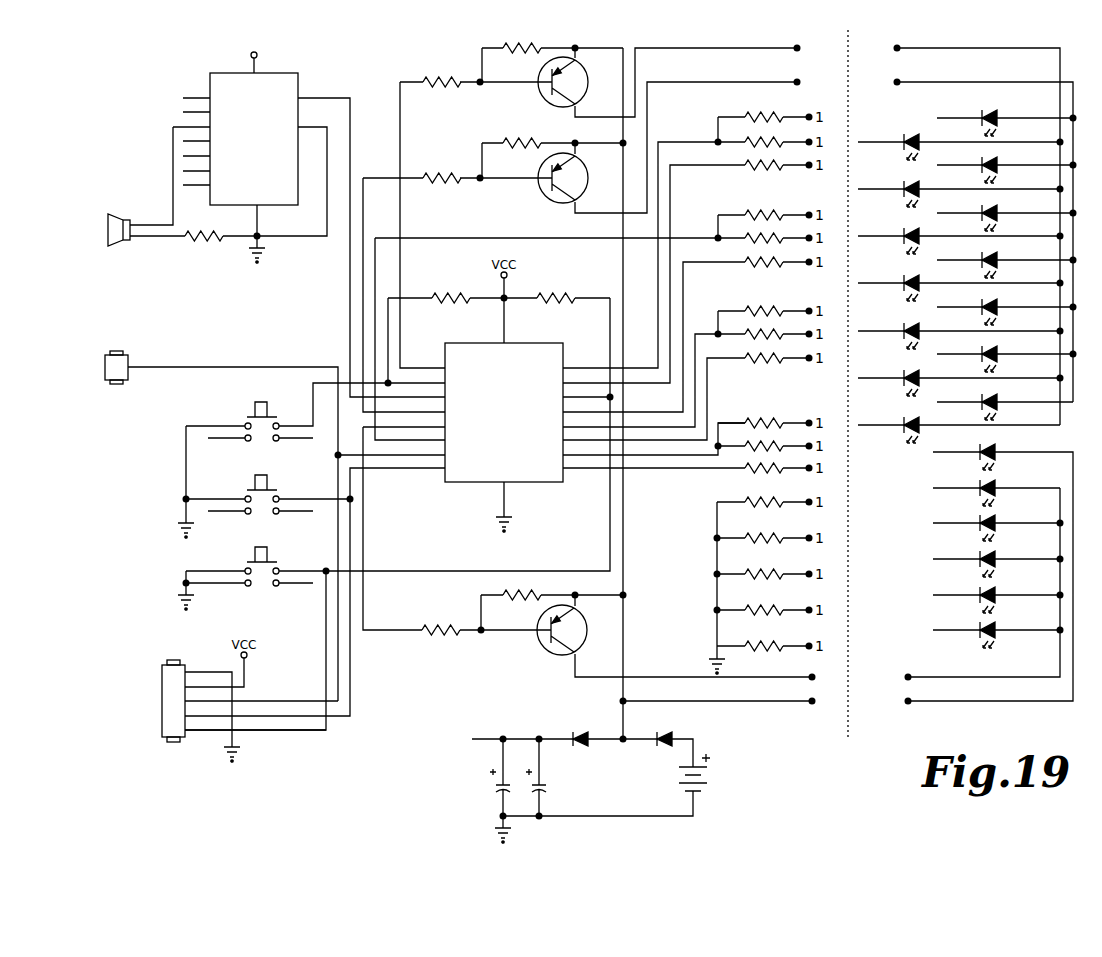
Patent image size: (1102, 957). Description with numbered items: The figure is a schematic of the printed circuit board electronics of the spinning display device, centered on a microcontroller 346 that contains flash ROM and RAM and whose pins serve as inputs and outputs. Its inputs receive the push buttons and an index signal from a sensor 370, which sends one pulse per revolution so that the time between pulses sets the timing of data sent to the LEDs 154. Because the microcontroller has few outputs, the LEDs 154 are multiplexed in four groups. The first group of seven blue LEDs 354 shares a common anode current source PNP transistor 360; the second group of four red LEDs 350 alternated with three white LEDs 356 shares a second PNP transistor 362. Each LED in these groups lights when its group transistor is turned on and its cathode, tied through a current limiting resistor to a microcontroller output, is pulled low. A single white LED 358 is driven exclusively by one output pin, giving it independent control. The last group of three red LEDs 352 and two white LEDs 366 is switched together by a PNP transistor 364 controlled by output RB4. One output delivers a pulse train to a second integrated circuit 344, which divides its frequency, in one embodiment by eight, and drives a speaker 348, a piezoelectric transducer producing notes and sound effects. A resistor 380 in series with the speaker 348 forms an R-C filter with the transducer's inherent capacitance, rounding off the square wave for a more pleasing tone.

The LEDs 154 is at (913, 135).
The second integrated circuit 344 is at (279, 73).
The microcontroller 346 is at (530, 343).
The speaker 348 is at (107, 230).
The red LEDs 350 is at (997, 401).
The red LEDs 352 is at (995, 629).
The blue LEDs 354 is at (914, 421).
The white LEDs 356 is at (997, 353).
The white LED 358 is at (995, 451).
The PNP transistor 360 is at (543, 105).
The PNP transistor 362 is at (543, 201).
The PNP transistor 364 is at (553, 655).
The white LEDs 366 is at (995, 594).
The sensor 370 is at (130, 362).
The resistor 380 is at (203, 243).